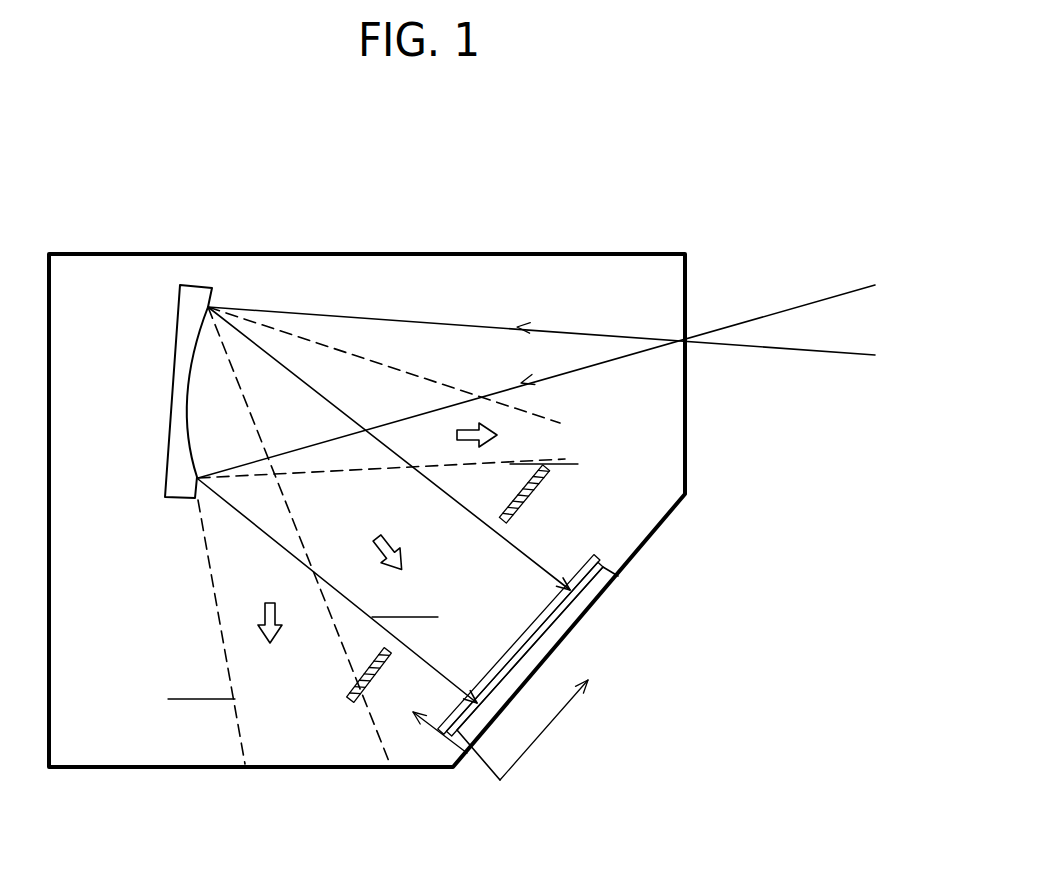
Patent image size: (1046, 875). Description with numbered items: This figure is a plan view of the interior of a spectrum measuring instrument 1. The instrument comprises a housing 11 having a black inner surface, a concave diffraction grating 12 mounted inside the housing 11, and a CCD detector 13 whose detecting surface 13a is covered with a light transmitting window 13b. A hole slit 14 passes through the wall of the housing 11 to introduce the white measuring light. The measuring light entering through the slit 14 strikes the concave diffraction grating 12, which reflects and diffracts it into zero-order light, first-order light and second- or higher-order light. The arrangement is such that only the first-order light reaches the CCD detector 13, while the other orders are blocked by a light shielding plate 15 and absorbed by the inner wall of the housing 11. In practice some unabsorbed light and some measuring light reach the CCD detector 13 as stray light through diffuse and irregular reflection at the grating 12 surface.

The spectrum measuring instrument 1 is at (313, 237).
The housing 11 is at (455, 252).
The concave diffraction grating 12 is at (177, 463).
The CCD detector 13 is at (585, 592).
The detecting surface 13a is at (516, 640).
The light transmitting window 13b is at (575, 565).
The hole slit 14 is at (692, 332).
The light shielding plate 15 is at (535, 497).